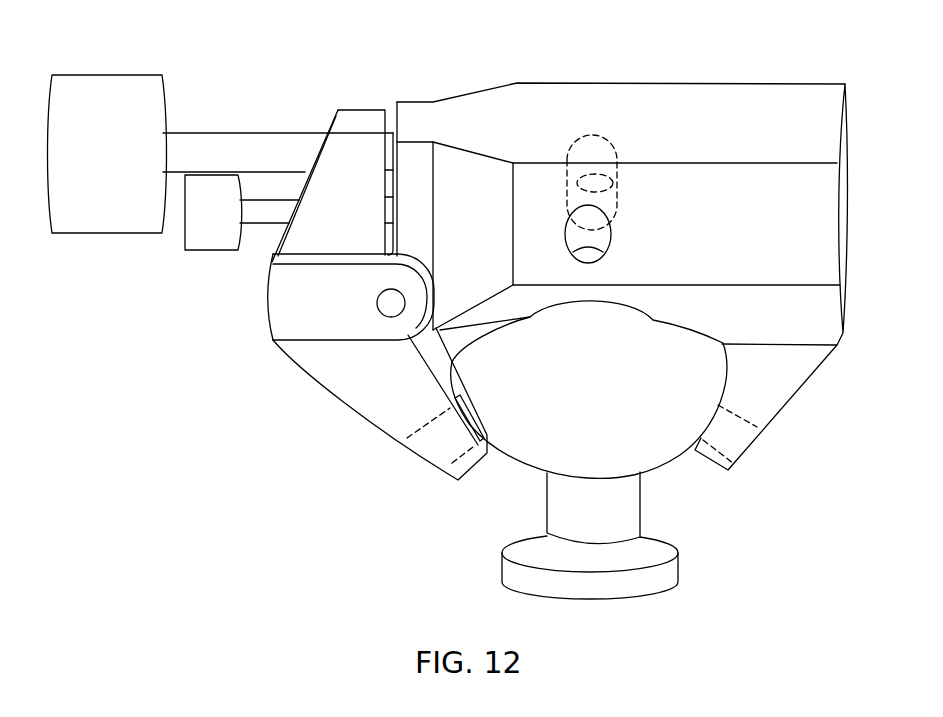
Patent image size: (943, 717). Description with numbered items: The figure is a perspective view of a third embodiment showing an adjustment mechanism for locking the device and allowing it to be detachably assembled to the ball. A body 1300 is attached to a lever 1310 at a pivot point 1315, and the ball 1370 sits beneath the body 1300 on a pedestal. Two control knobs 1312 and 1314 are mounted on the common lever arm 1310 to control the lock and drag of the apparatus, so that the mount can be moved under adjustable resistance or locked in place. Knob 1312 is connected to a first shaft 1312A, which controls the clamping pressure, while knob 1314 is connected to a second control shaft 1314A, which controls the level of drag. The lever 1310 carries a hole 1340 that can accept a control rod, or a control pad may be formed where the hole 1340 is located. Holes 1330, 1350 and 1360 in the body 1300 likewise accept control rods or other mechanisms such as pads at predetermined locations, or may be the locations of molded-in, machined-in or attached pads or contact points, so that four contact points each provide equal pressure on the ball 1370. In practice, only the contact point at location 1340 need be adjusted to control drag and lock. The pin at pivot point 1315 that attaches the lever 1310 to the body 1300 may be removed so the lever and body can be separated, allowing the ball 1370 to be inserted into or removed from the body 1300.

The body 1300 is at (813, 192).
The lever 1310 is at (385, 392).
The control knob 1312 is at (95, 105).
The first shaft 1312A is at (203, 148).
The control knob 1314 is at (193, 243).
The second control shaft 1314A is at (257, 217).
The pivot point 1315 is at (383, 315).
The hole 1330 is at (597, 135).
The hole 1340 is at (472, 448).
The hole 1350 is at (565, 232).
The hole 1360 is at (727, 432).
The ball 1370 is at (668, 420).